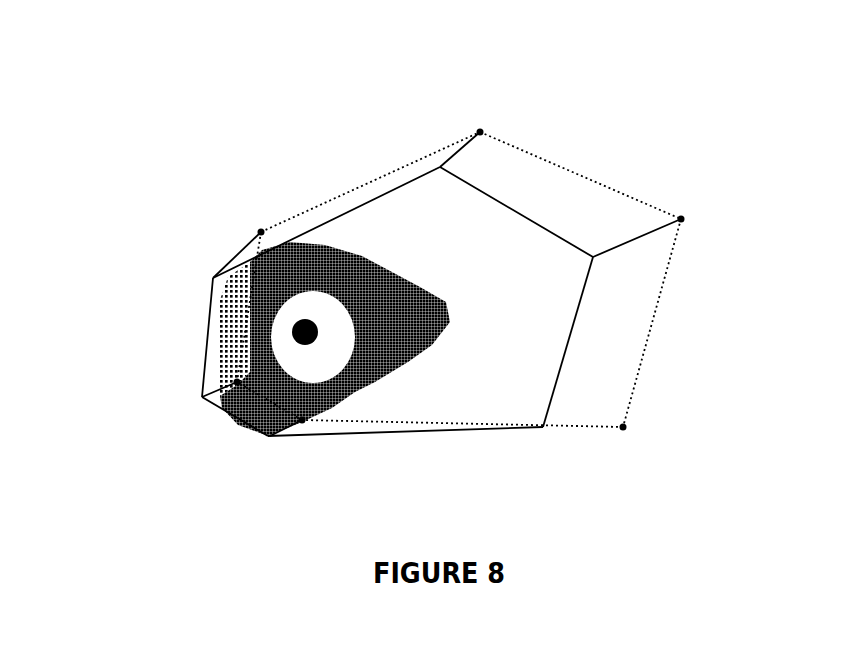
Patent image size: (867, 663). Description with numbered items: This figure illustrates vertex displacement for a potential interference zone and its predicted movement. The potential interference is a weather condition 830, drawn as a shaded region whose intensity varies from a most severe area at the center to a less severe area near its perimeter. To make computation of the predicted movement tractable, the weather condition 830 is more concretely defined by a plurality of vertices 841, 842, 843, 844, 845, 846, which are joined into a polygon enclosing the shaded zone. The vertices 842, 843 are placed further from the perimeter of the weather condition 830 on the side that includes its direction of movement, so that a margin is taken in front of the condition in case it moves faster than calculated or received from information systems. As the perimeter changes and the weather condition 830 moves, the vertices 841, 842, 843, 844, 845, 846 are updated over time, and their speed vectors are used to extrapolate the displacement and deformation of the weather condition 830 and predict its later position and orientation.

The weather condition 830 is at (318, 273).
The vertex 841 is at (328, 200).
The vertex 842 is at (522, 212).
The vertex 843 is at (663, 297).
The vertex 844 is at (418, 437).
The vertex 845 is at (237, 382).
The vertex 846 is at (213, 278).